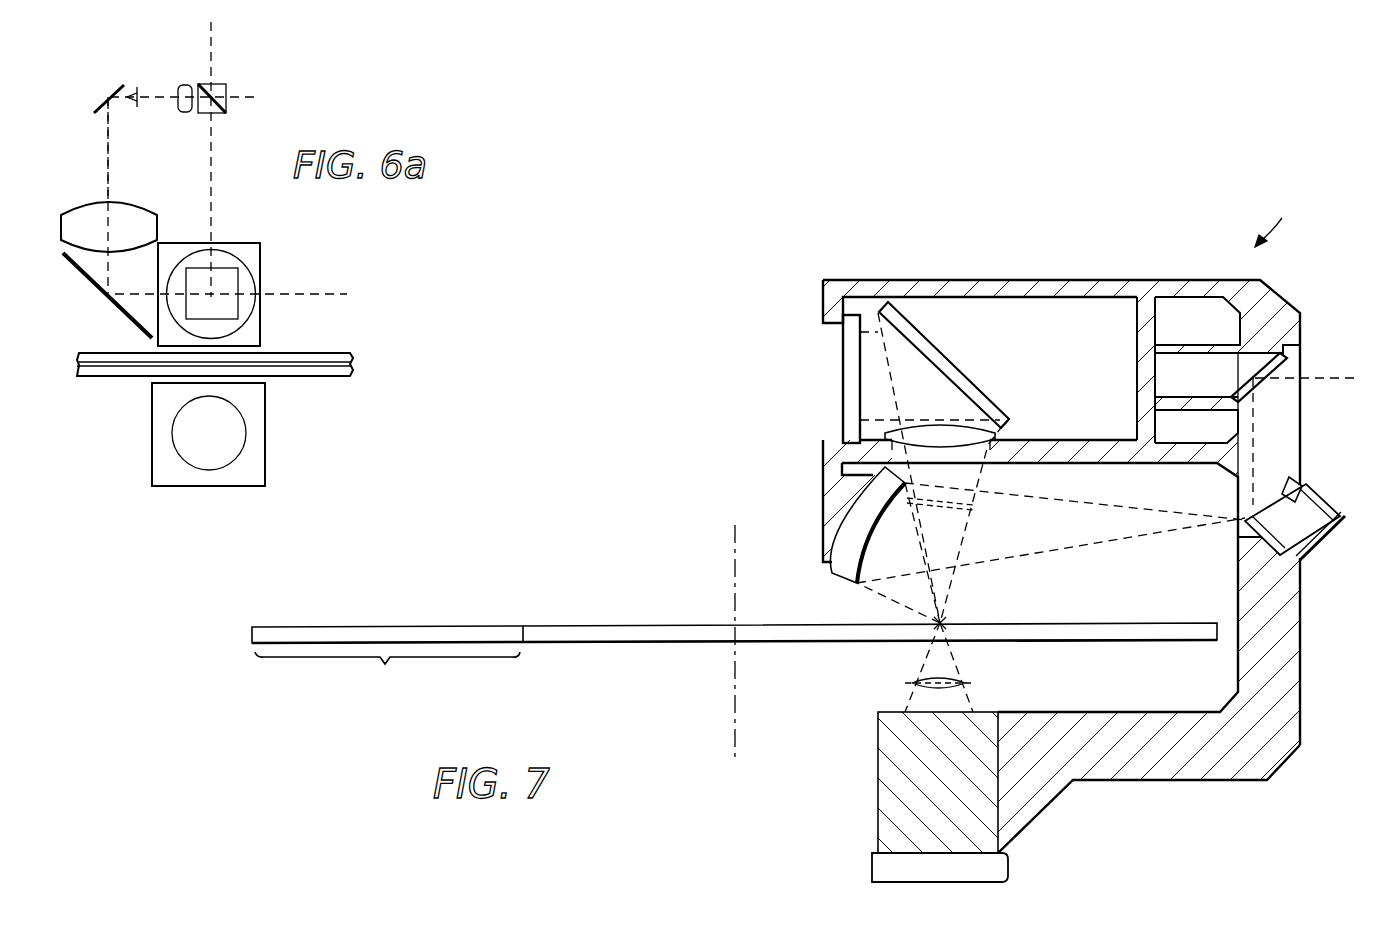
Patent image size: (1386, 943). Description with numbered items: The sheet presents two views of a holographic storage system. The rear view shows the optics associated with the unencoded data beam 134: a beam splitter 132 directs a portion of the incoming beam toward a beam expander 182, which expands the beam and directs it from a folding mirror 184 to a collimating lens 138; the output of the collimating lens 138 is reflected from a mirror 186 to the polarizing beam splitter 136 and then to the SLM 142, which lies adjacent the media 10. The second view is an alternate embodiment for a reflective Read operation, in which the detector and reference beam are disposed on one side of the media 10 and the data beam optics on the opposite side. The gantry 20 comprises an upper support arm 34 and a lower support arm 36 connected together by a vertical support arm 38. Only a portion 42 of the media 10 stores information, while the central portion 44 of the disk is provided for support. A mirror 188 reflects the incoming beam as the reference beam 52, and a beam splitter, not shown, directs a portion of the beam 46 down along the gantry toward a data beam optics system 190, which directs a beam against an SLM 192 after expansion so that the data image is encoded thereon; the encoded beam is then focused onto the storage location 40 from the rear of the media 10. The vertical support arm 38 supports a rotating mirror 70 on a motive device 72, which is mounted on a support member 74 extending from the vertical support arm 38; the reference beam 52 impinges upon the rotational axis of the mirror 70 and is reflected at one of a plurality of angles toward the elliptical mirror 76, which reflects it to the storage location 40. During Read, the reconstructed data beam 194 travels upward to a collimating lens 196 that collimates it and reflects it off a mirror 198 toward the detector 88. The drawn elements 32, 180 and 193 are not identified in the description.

In FIG. 6a, the media 10 is at (107, 378).
In FIG. 7, the media 10 is at (466, 625).
In FIG. 7, the gantry 20 is at (1280, 217).
In FIG. 7, the housing 32 is at (823, 298).
In FIG. 7, the upper support arm 34 is at (1093, 280).
In FIG. 7, the lower support arm 36 is at (1118, 780).
In FIG. 7, the vertical support arm 38 is at (1290, 636).
In FIG. 7, the storage location 40 is at (940, 623).
In FIG. 7, the information-storing portion of the media 42 is at (387, 674).
In FIG. 7, the central portion of the disk 44 is at (600, 630).
In FIG. 7, the beam 46 is at (1335, 378).
In FIG. 7, the reference beam 52 is at (1255, 425).
In FIG. 7, the rotating mirror 70 is at (1243, 525).
In FIG. 7, the motive device 72 is at (1308, 490).
In FIG. 7, the support member 74 is at (1330, 528).
In FIG. 7, the elliptical mirror 76 is at (832, 570).
In FIG. 7, the detector 88 is at (848, 402).
In FIG. 6a, the beam splitter 132 is at (217, 85).
In FIG. 6a, the unencoded data beam 134 is at (108, 163).
In FIG. 6a, the polarizing beam splitter 136 is at (238, 308).
In FIG. 6a, the collimating lens 138 is at (135, 212).
In FIG. 6a, the SLM 142 is at (260, 257).
In FIG. 6a, the light source 180 is at (262, 452).
In FIG. 6a, the beam expander 182 is at (183, 86).
In FIG. 6a, the folding mirror 184 is at (100, 100).
In FIG. 6a, the mirror 186 is at (75, 268).
In FIG. 7, the mirror 188 is at (1233, 392).
In FIG. 7, the data beam optics system 190 is at (888, 778).
In FIG. 7, the SLM 192 is at (878, 866).
In FIG. 7, the lens 193 is at (965, 683).
In FIG. 7, the reconstructed data beam 194 is at (973, 507).
In FIG. 7, the collimating lens 196 is at (1000, 440).
In FIG. 7, the mirror 198 is at (950, 375).